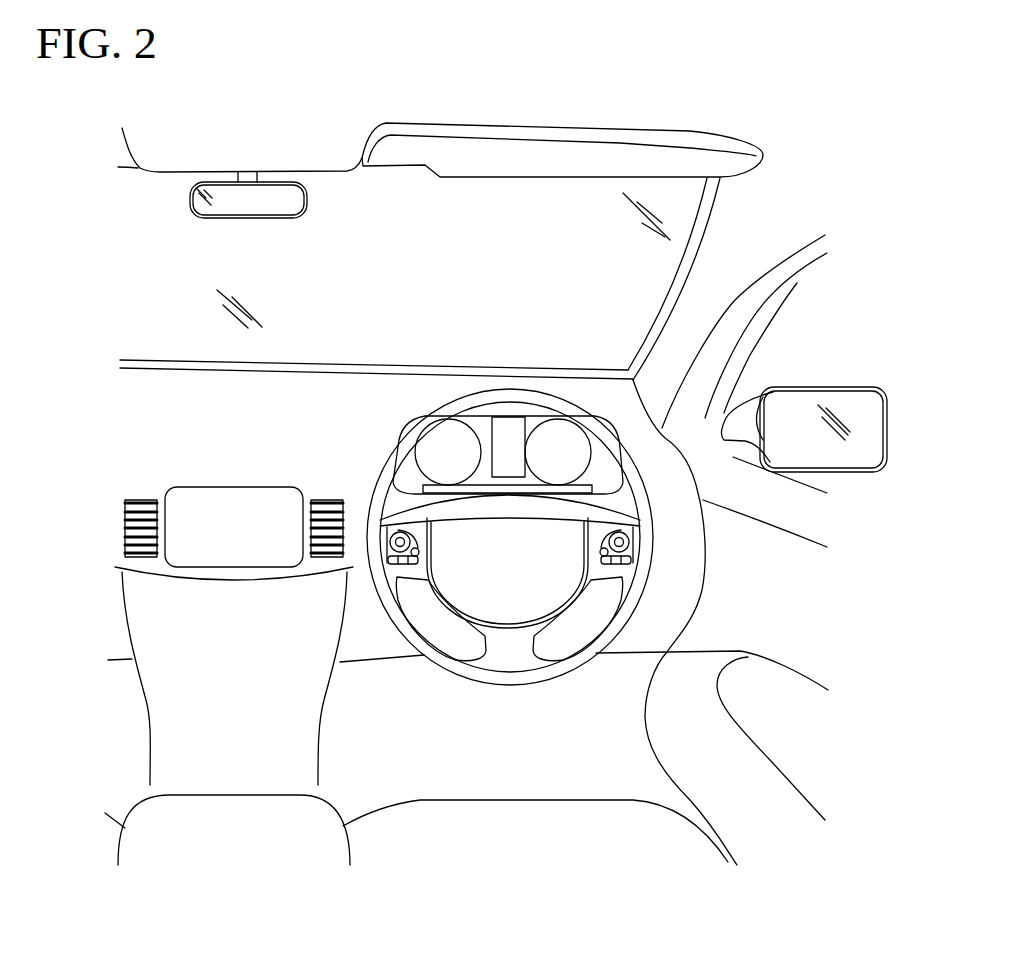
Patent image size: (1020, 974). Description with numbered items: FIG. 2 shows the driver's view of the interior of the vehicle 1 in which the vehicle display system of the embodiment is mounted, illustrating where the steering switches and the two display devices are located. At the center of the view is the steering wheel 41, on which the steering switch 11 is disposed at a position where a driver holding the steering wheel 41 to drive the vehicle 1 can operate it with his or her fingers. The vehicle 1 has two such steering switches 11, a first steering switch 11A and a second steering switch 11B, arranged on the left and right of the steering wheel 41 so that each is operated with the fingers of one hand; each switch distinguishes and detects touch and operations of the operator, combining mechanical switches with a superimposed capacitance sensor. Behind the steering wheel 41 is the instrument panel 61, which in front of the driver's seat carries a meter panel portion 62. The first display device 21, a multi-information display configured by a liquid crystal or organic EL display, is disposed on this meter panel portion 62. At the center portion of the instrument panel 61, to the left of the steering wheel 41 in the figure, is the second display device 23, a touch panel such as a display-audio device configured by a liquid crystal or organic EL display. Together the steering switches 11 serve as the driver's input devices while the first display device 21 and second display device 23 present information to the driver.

The vehicle 1 is at (779, 144).
The steering switch 11 is at (514, 639).
The first steering switch 11A is at (408, 584).
The second steering switch 11B is at (602, 584).
The first display device 21 is at (508, 412).
The second display device 23 is at (272, 498).
The steering wheel 41 is at (433, 422).
The instrument panel 61 is at (352, 418).
The meter panel portion 62 is at (572, 402).